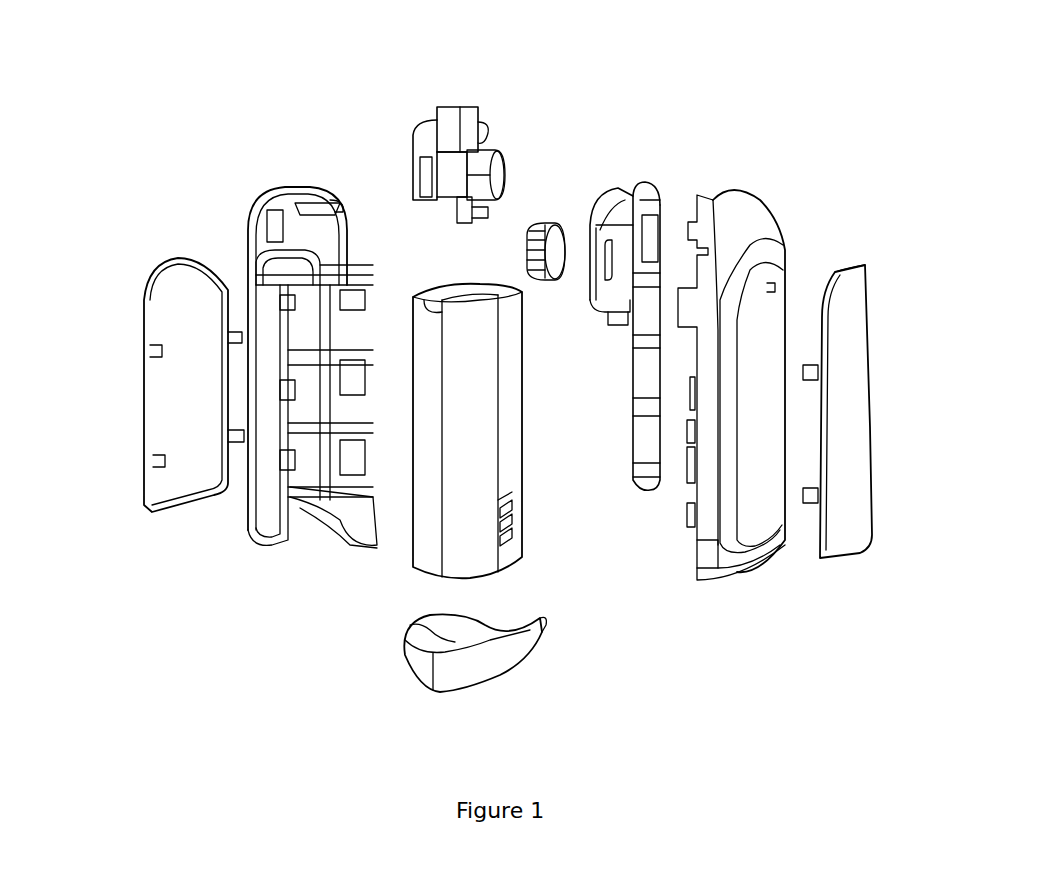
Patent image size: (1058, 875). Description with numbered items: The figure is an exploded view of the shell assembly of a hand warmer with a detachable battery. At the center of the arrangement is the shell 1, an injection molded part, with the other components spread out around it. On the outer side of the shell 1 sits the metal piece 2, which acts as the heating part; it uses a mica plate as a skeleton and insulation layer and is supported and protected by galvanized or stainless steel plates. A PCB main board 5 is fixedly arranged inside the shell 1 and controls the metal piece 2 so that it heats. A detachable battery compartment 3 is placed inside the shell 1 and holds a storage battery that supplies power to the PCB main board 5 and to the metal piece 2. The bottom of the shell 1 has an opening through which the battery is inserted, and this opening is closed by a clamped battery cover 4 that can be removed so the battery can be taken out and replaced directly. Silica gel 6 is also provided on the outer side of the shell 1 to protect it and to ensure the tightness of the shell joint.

The shell 1 is at (738, 237).
The metal piece 2 is at (170, 330).
The battery compartment 3 is at (290, 245).
The battery cover 4 is at (470, 670).
The PCB main board 5 is at (430, 118).
The silica gel 6 is at (634, 180).